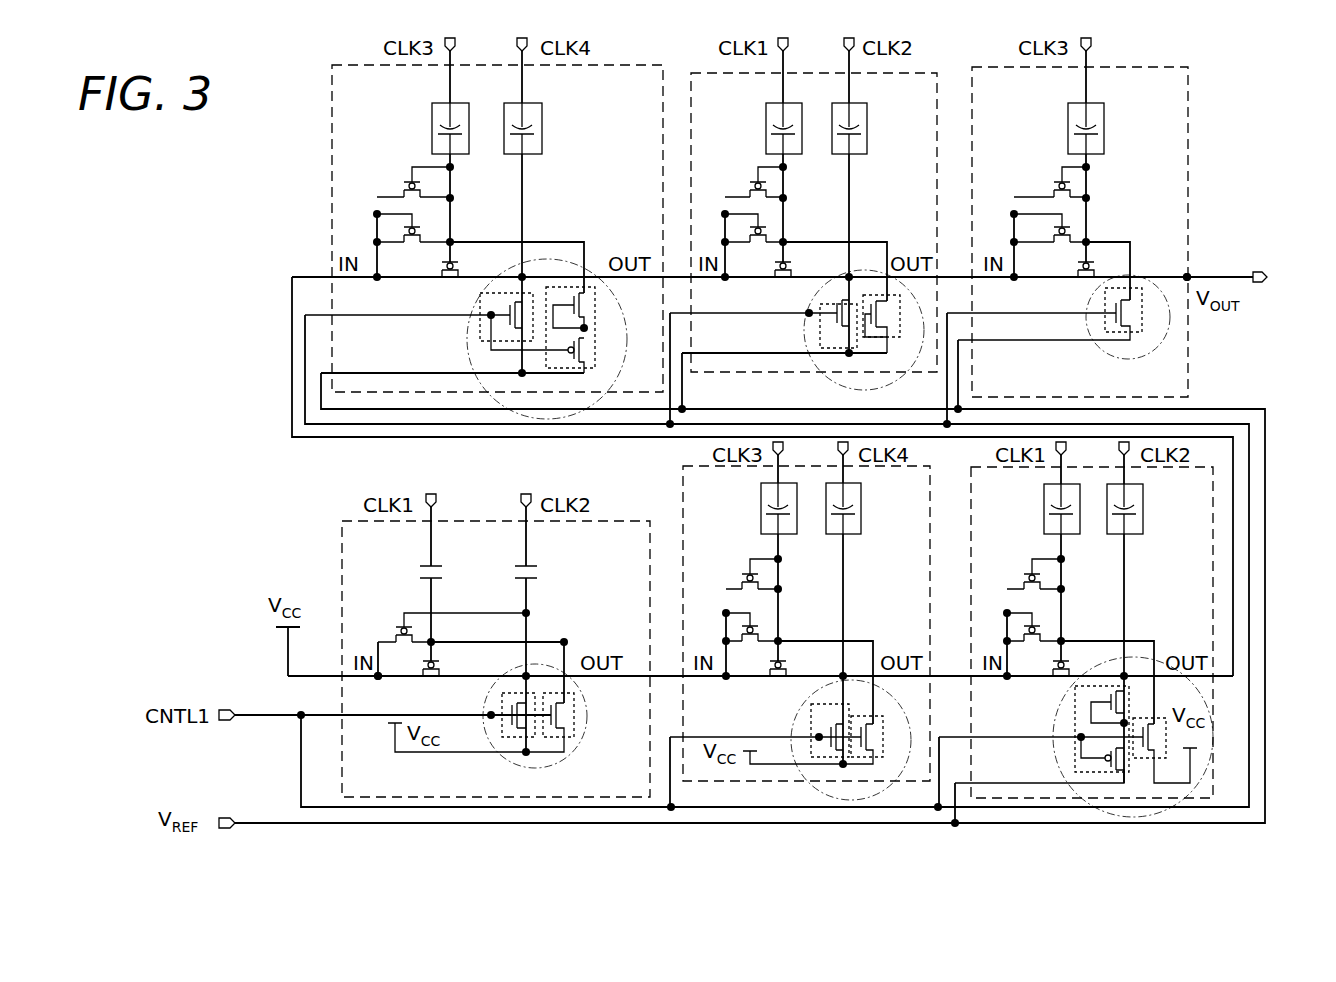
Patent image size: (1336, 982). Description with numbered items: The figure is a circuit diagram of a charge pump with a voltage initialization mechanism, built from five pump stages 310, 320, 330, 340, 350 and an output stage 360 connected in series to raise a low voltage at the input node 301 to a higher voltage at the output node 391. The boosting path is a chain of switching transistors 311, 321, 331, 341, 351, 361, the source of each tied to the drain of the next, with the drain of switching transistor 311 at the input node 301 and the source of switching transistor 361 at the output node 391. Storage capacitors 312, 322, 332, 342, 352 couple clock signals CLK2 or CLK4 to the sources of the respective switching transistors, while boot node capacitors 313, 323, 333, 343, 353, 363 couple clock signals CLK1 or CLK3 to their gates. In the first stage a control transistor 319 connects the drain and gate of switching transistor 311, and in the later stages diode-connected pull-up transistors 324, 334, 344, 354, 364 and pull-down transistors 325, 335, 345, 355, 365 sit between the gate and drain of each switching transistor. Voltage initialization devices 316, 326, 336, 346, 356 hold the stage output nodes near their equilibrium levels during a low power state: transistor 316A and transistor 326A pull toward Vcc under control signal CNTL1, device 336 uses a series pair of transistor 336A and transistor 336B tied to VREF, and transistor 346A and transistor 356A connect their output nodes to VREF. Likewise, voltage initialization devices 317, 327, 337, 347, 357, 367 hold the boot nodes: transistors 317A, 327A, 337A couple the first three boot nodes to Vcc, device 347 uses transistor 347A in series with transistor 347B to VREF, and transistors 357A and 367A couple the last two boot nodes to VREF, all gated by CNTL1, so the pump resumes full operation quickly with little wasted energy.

The input node 301 is at (378, 681).
The first pump stage 310 is at (650, 521).
The switching transistor 311 is at (440, 662).
The storage capacitor 312 is at (540, 570).
The boot node capacitor 313 is at (418, 572).
The voltage initialization device 316 is at (500, 738).
The N type field effect transistor 316A is at (510, 705).
The voltage initialization device 317 is at (575, 745).
The N type field effect transistor 317A is at (565, 716).
The control transistor 319 is at (393, 630).
The second pump stage 320 is at (930, 490).
The switching transistor 321 is at (786, 660).
The storage capacitor 322 is at (861, 508).
The boot node capacitor 323 is at (761, 508).
The pull-up transistor 324 is at (760, 623).
The pull-down transistor 325 is at (762, 580).
The voltage initialization device 326 is at (811, 706).
The N type field effect transistor 326A is at (830, 732).
The voltage initialization device 327 is at (878, 760).
The N type field effect transistor 327A is at (875, 738).
The third pump stage 330 is at (1213, 480).
The switching transistor 331 is at (1058, 680).
The storage capacitor 332 is at (1143, 508).
The boot node capacitor 333 is at (1044, 508).
The pull-up transistor 334 is at (1042, 623).
The pull-down transistor 335 is at (1044, 580).
The voltage initialization device 336 is at (1074, 758).
The N type field effect transistor 336A is at (1110, 700).
The S type field effect transistor 336B is at (1100, 768).
The voltage initialization device 337 is at (1145, 760).
The N type field effect transistor 337A is at (1158, 740).
The fourth pump stage 340 is at (663, 72).
The switching transistor 341 is at (441, 265).
The storage capacitor 342 is at (542, 125).
The boot node capacitor 343 is at (432, 128).
The pull-up transistor 344 is at (432, 228).
The pull-down transistor 345 is at (432, 190).
The voltage initialization device 346 is at (478, 326).
The N type field effect transistor 346A is at (500, 311).
The voltage initialization device 347 is at (552, 395).
The N type field effect transistor 347A is at (590, 320).
The S type field effect transistor 347B is at (597, 372).
The fifth pump stage 350 is at (937, 80).
The switching transistor 351 is at (790, 262).
The storage capacitor 352 is at (867, 125).
The boot node capacitor 353 is at (766, 127).
The pull-up transistor 354 is at (766, 227).
The pull-down transistor 355 is at (786, 188).
The voltage initialization device 356 is at (830, 350).
The S type field effect transistor 356A is at (840, 335).
The voltage initialization device 357 is at (878, 340).
The N type field effect transistor 357A is at (868, 302).
The output stage 360 is at (1188, 80).
The switching transistor 361 is at (1084, 282).
The boot node capacitor 363 is at (1104, 125).
The pull-up transistor 364 is at (1075, 226).
The pull-down transistor 365 is at (1090, 188).
The voltage initialization device 367 is at (1140, 335).
The N type field effect transistor 367A is at (1110, 322).
The output node 391 is at (1190, 276).